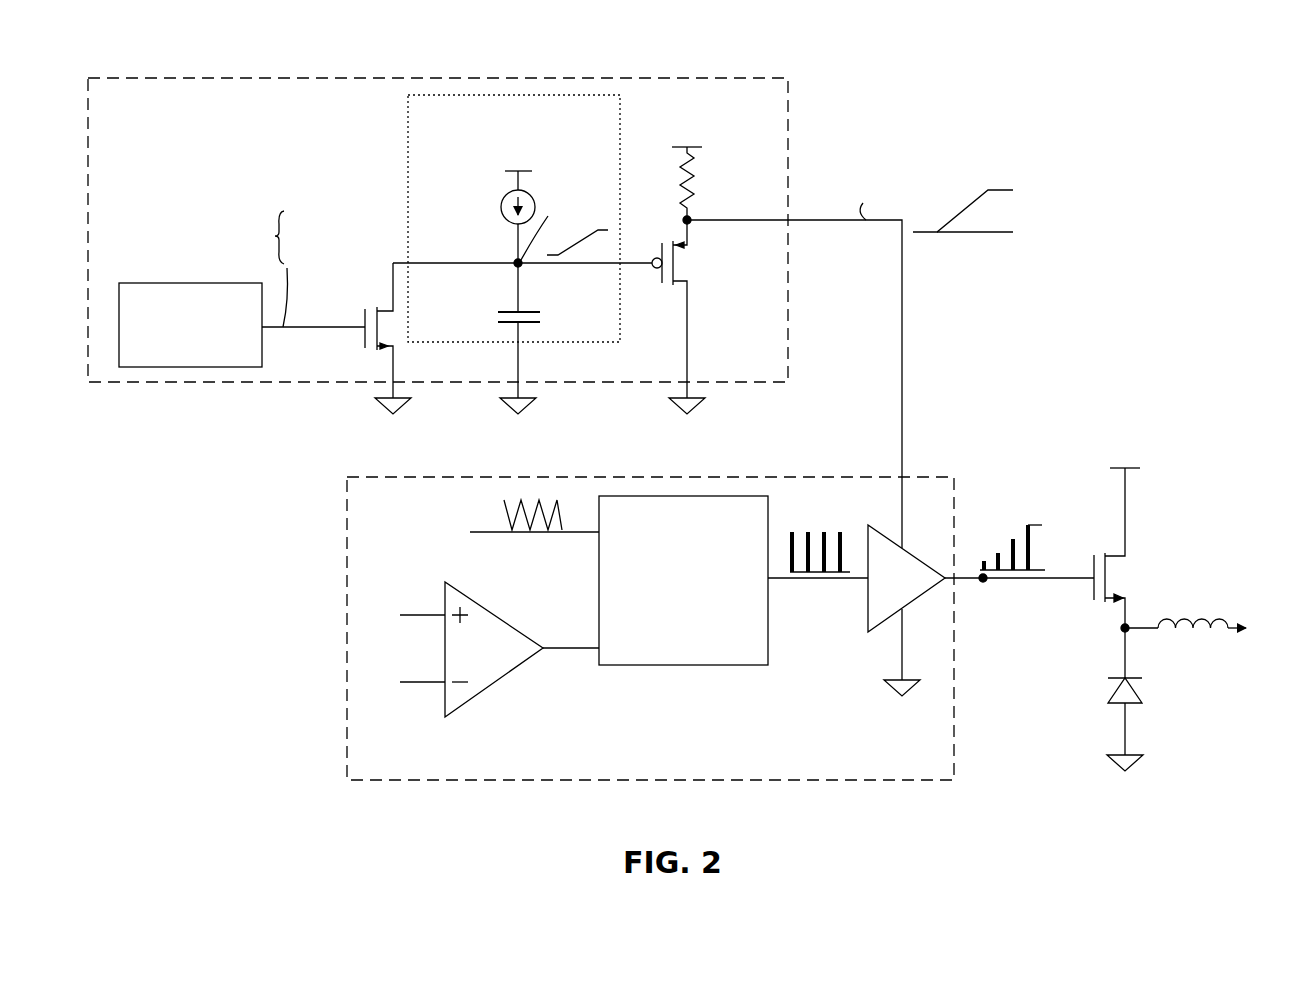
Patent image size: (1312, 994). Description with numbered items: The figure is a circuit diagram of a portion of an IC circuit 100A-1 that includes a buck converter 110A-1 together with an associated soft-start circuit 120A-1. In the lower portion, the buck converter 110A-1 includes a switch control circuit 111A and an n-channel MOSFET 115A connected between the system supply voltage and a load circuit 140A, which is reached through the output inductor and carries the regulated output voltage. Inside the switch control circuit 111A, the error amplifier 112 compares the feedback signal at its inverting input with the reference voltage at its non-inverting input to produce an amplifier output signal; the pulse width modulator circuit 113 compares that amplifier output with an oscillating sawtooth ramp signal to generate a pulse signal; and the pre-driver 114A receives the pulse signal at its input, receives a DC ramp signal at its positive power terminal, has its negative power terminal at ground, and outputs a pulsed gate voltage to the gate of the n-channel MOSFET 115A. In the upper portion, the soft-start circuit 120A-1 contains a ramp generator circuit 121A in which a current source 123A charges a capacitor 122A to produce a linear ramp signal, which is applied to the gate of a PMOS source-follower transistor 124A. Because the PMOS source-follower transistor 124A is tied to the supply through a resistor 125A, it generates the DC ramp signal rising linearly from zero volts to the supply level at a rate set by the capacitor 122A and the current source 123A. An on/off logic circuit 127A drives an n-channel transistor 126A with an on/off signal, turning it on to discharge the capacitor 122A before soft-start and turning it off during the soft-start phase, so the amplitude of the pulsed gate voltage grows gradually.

The IC circuit 100A-1 is at (1108, 72).
The buck converter 110A-1 is at (1046, 382).
The switch control circuit 111A is at (830, 759).
The error amplifier 112 is at (506, 661).
The pulse width modulator circuit 113 is at (667, 645).
The pre-driver 114A is at (924, 589).
The n-channel MOSFET 115A is at (1093, 592).
The soft-start circuit 120A-1 is at (330, 162).
The ramp generator circuit 121A is at (599, 135).
The capacitor 122A is at (528, 312).
The current source 123A is at (503, 200).
The PMOS source-follower transistor 124A is at (658, 251).
The resistor 125A is at (678, 186).
The n-channel transistor 126A is at (388, 310).
The on/off logic circuit 127A is at (167, 360).
The load circuit 140A is at (1212, 630).